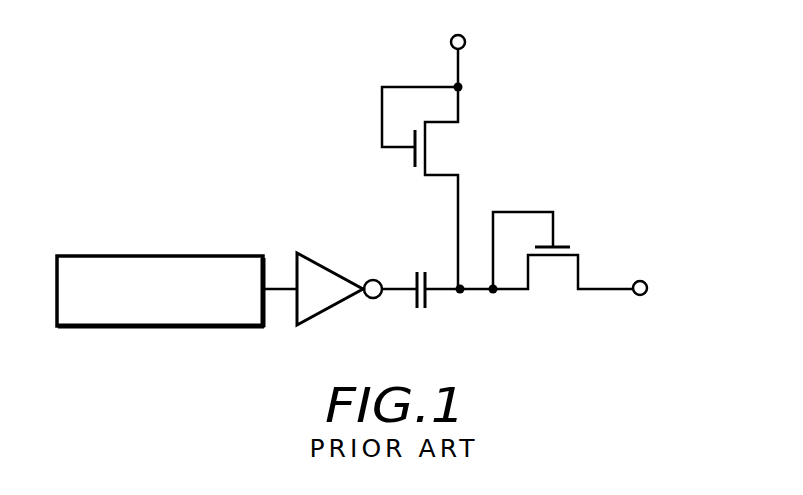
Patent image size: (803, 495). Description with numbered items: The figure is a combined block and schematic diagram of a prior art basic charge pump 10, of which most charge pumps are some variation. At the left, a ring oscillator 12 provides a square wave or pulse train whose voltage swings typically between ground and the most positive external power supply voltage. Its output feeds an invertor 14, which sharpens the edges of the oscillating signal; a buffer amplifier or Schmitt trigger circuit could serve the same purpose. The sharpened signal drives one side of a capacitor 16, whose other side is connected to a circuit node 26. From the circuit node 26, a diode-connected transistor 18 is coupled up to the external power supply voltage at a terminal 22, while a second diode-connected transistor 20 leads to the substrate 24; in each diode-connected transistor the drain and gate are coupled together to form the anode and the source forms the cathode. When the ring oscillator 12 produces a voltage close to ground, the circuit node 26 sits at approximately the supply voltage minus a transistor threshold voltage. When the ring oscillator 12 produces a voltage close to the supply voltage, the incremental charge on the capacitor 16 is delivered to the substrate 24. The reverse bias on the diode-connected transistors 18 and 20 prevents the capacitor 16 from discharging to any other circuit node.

The basic charge pump 10 is at (150, 190).
The ring oscillator 12 is at (173, 255).
The invertor 14 is at (335, 305).
The capacitor 16 is at (415, 280).
The diode-connected transistor 18 is at (442, 125).
The diode-connected transistor 20 is at (530, 278).
The terminal 22 is at (467, 38).
The substrate 24 is at (647, 278).
The circuit node 26 is at (460, 295).